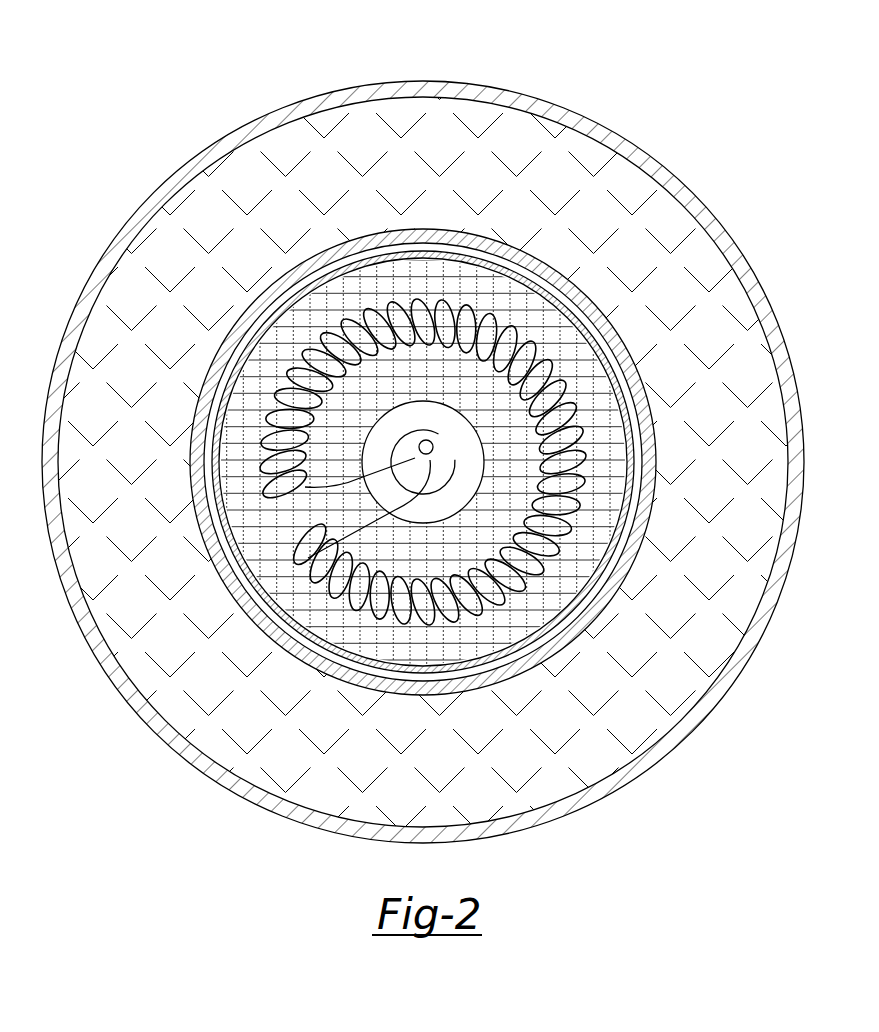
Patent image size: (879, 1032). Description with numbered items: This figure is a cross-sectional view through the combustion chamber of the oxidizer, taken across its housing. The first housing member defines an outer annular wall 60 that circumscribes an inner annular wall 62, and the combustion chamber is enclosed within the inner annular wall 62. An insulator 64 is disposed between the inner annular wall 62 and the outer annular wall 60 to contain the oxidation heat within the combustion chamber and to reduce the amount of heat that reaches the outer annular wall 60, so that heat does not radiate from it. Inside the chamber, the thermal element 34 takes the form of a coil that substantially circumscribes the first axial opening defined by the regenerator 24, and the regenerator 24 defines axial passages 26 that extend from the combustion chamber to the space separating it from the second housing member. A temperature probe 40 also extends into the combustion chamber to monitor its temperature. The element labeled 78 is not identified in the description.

The outer annular wall 60 is at (473, 83).
The inner annular wall 62 is at (237, 313).
The insulator 64 is at (453, 768).
The axial passages 26 is at (598, 380).
The regenerator 24 is at (600, 498).
The thermal element 34 is at (488, 315).
The temperature probe 40 is at (433, 442).
The hub 78 is at (418, 422).